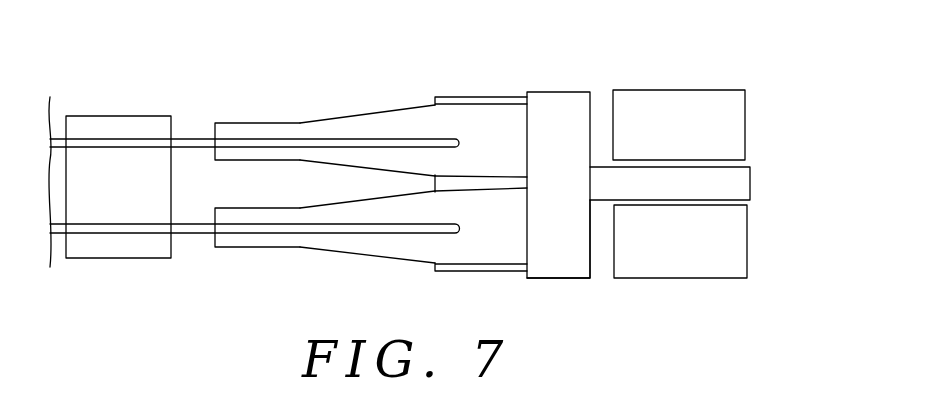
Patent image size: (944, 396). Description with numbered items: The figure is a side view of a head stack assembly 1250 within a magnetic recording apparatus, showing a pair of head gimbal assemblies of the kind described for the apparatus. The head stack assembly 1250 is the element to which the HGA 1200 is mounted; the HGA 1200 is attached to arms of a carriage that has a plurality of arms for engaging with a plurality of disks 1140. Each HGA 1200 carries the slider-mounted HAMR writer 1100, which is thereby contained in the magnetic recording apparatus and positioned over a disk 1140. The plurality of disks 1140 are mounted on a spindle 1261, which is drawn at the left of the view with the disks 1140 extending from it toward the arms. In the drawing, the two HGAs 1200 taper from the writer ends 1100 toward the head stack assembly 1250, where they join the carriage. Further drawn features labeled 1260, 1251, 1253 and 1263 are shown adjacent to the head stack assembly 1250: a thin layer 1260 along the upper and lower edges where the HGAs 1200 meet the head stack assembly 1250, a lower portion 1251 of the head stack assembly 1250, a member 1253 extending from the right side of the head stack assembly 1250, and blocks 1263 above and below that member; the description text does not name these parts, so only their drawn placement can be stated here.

The slider-mounted HAMR writer 1100 is at (213, 123).
The disks 1140 is at (185, 138).
The HGA 1200 is at (307, 126).
The head stack assembly 1250 is at (563, 70).
The connector block end portion 1251 is at (562, 266).
The output waveguide 1253 is at (742, 181).
The cover layer 1260 is at (440, 97).
The spindle 1261 is at (107, 130).
The housing block 1263 is at (680, 100).